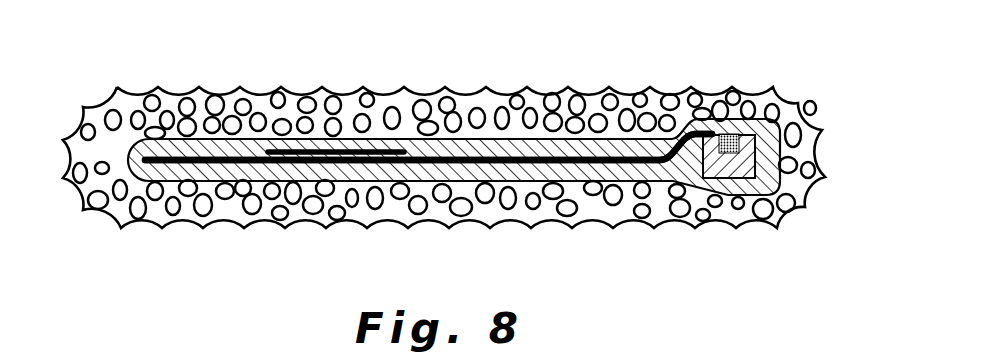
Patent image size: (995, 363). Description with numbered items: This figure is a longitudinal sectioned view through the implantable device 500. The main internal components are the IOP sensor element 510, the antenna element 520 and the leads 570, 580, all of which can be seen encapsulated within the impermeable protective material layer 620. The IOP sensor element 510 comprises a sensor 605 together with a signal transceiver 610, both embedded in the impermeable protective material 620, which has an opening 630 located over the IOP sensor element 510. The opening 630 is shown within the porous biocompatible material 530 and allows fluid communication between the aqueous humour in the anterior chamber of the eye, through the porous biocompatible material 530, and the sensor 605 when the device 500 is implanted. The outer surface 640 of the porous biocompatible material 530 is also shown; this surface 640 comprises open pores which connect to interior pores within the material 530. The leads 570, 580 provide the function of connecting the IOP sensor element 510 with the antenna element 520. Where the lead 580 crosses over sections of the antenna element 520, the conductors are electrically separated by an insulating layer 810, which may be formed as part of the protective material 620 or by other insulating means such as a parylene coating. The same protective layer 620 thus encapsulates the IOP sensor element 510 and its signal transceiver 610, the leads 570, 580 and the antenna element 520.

The device 500 is at (454, 165).
The IOP sensor element 510 is at (791, 99).
The antenna element 520 is at (277, 162).
The porous biocompatible material 530 is at (560, 97).
The lead 570 is at (578, 163).
The lead 580 is at (278, 160).
The sensor 605 is at (733, 136).
The signal transceiver 610 is at (733, 172).
The impermeable protective material 620 is at (178, 183).
The opening 630 is at (718, 134).
The outer surface 640 is at (703, 216).
The insulating layer 810 is at (350, 150).